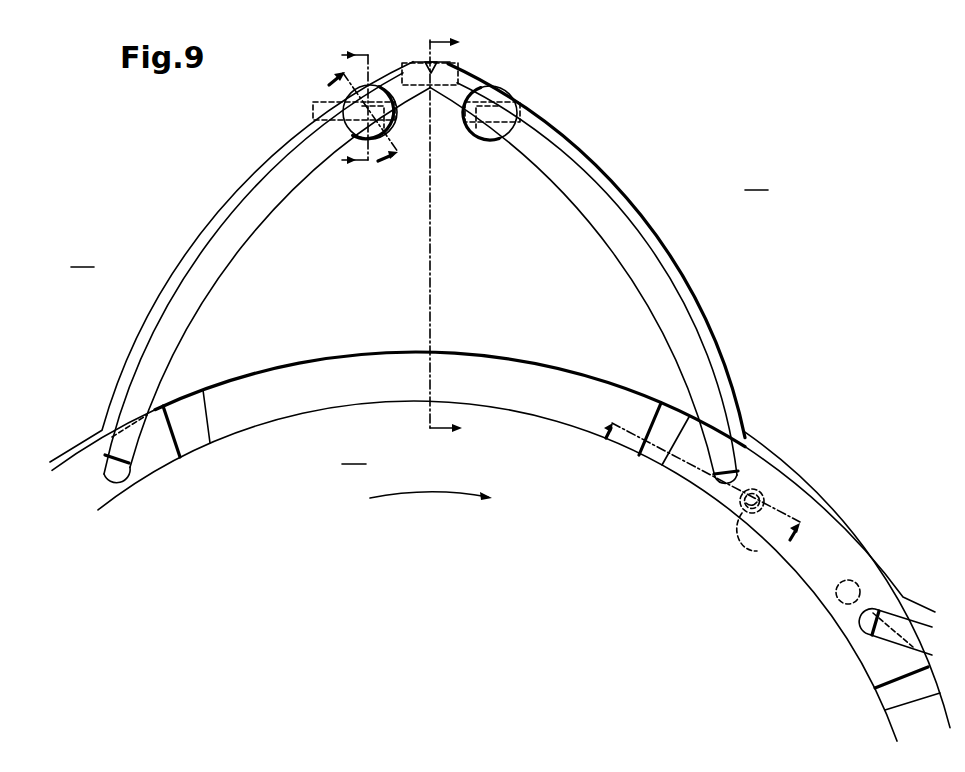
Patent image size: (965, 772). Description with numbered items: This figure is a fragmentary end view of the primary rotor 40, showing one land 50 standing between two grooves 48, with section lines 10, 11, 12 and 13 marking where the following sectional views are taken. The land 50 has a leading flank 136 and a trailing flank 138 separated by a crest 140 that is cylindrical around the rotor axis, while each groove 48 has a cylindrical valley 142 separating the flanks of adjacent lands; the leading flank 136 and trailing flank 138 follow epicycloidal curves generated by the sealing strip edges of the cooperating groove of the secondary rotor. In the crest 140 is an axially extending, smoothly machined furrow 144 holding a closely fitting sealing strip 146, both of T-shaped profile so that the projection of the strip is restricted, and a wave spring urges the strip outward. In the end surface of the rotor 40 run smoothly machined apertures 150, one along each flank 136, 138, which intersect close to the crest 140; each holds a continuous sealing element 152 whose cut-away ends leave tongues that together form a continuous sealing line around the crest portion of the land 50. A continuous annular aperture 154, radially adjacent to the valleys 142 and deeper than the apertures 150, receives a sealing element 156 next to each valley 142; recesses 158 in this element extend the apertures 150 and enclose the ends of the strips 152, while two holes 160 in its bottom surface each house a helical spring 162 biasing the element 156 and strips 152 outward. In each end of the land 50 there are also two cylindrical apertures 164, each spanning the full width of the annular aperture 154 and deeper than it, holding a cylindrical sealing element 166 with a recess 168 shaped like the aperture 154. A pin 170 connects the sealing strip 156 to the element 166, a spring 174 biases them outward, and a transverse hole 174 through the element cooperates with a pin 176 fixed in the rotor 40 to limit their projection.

The section line 10— 10 is at (344, 108).
The section line 11— 11 is at (351, 127).
The section line 12— 12 is at (698, 496).
The section line 13— 13 is at (459, 234).
The primary rotor 40 is at (417, 470).
The groove 48 is at (419, 217).
The land 50 is at (262, 227).
The leading flank 136 is at (654, 234).
The trailing flank 138 is at (183, 258).
The crest 140 is at (459, 64).
The valley 142 is at (826, 548).
The furrow 144 is at (460, 80).
The sealing strip 146 is at (416, 63).
The aperture 150 is at (150, 318).
The sealing element 152 is at (130, 375).
The annular aperture 154 is at (372, 354).
The sealing element 156 is at (163, 470).
The recess 158 is at (112, 477).
The hole 160 is at (748, 513).
The helical spring 162 is at (755, 542).
The cylindrical aperture 164 is at (505, 100).
The cylindrical sealing element 166 is at (502, 140).
The recess 168 is at (392, 110).
The pin 170 is at (387, 146).
The spring 174 is at (390, 128).
The pin 176 is at (316, 110).